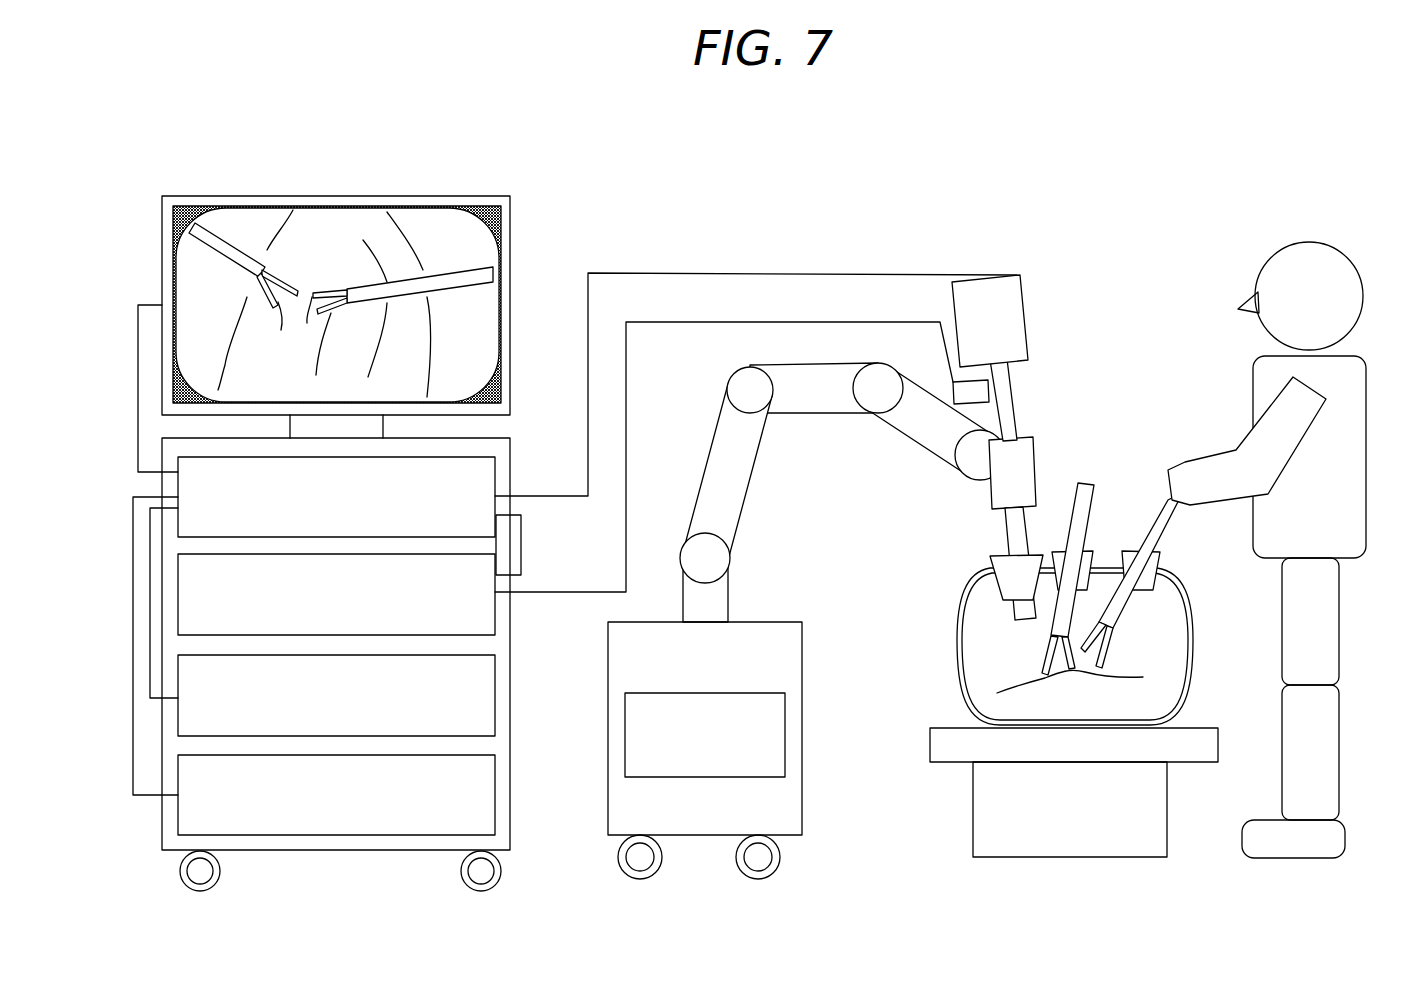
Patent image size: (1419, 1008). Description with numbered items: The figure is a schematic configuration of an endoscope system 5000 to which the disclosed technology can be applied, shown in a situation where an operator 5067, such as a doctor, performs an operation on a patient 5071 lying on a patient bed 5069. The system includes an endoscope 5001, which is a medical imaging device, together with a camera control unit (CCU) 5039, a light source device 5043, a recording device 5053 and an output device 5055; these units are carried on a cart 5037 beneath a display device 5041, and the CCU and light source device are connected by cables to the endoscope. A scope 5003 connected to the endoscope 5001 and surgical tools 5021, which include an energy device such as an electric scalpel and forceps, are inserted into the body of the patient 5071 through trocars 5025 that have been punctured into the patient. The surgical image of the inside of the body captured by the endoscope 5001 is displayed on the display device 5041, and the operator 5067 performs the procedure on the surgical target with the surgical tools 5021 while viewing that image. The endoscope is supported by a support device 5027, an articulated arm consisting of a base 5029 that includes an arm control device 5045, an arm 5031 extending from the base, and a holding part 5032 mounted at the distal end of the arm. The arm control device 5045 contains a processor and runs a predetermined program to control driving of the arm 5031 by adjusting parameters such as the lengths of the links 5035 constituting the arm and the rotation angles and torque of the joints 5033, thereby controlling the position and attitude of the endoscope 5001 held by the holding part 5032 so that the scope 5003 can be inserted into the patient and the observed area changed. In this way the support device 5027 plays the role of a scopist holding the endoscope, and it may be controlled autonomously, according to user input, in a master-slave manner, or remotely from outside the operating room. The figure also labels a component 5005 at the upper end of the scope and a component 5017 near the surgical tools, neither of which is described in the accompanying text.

The endoscope system 5000 is at (968, 175).
The endoscope 5001 is at (1023, 447).
The scope 5003 is at (1013, 400).
The camera head 5005 is at (1028, 307).
The other surgical tools 5017 is at (1077, 547).
The surgical tools 5021 is at (1088, 488).
The trocars 5025 is at (1118, 540).
The support device 5027 is at (800, 618).
The base 5029 is at (763, 622).
The arm 5031 is at (819, 489).
The holding part 5032 is at (988, 497).
The joints 5033 is at (736, 385).
The links 5035 is at (814, 414).
The cart 5037 is at (500, 436).
The camera control unit (CCU) 5039 is at (495, 482).
The display device 5041 is at (384, 196).
The light source device 5043 is at (495, 614).
The arm control device 5045 is at (718, 695).
The recording device 5053 is at (495, 698).
The output device 5055 is at (495, 798).
The operator 5067 is at (1312, 242).
The patient bed 5069 is at (1217, 748).
The patient 5071 is at (1220, 652).